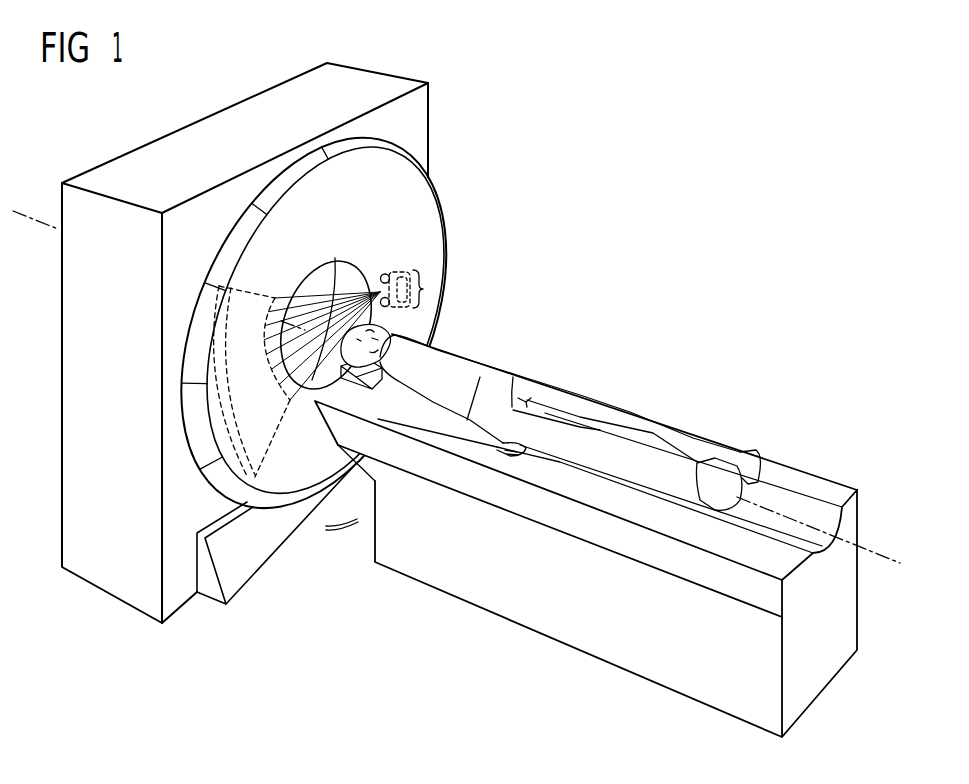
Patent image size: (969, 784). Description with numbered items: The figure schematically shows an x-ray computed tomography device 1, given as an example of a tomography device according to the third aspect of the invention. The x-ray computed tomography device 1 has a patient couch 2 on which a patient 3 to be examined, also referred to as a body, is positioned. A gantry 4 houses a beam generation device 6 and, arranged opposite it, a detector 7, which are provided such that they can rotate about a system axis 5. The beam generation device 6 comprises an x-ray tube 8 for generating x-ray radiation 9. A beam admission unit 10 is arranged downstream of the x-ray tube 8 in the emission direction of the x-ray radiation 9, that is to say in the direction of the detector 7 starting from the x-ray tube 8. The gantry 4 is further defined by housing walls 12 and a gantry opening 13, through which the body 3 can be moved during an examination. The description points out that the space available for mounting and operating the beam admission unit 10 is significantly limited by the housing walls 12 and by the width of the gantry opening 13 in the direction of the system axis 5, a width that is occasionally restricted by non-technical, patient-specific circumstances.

The x-ray computed tomography device 1 is at (576, 304).
The patient couch 2 is at (710, 448).
The patient 3 is at (468, 387).
The gantry 4 is at (208, 131).
The system axis 5 is at (885, 557).
The beam generation device 6 is at (423, 260).
The detector 7 is at (258, 447).
The x-ray tube 8 is at (398, 272).
The x-ray radiation 9 is at (347, 287).
The beam admission unit 10 is at (384, 273).
The housing walls 12 is at (443, 222).
The gantry opening 13 is at (318, 282).